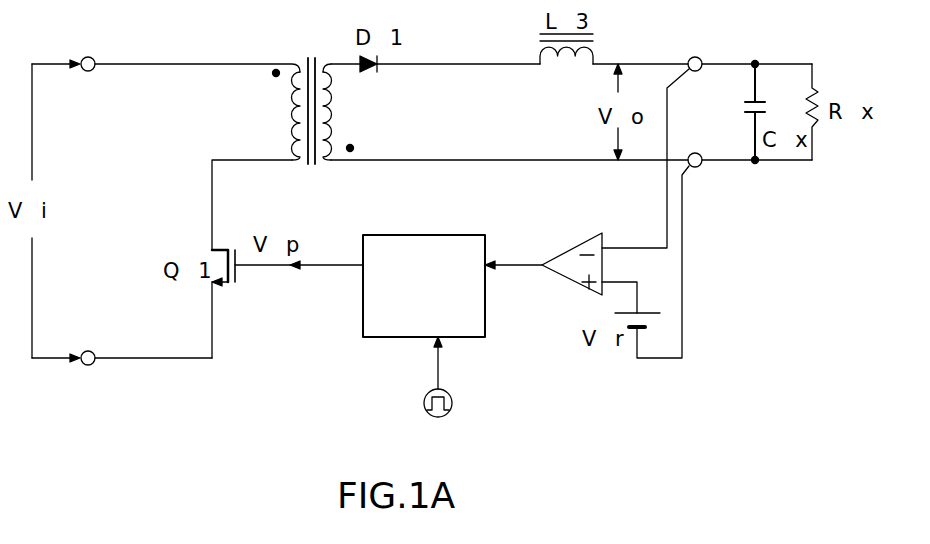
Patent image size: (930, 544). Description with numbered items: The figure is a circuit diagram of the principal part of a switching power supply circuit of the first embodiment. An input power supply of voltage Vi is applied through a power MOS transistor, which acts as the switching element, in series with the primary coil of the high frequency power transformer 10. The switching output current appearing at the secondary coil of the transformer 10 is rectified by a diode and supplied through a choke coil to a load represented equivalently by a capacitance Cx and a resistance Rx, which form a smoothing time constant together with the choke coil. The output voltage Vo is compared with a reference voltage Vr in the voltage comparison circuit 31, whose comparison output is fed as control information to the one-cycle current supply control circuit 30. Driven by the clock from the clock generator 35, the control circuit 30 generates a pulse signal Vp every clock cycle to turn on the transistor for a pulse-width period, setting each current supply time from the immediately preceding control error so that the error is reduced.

The high frequency power transformer 10 is at (315, 57).
The one-cycle current supply control circuit 30 is at (391, 337).
The voltage comparison circuit 31 is at (565, 281).
The clock generator 35 is at (452, 403).